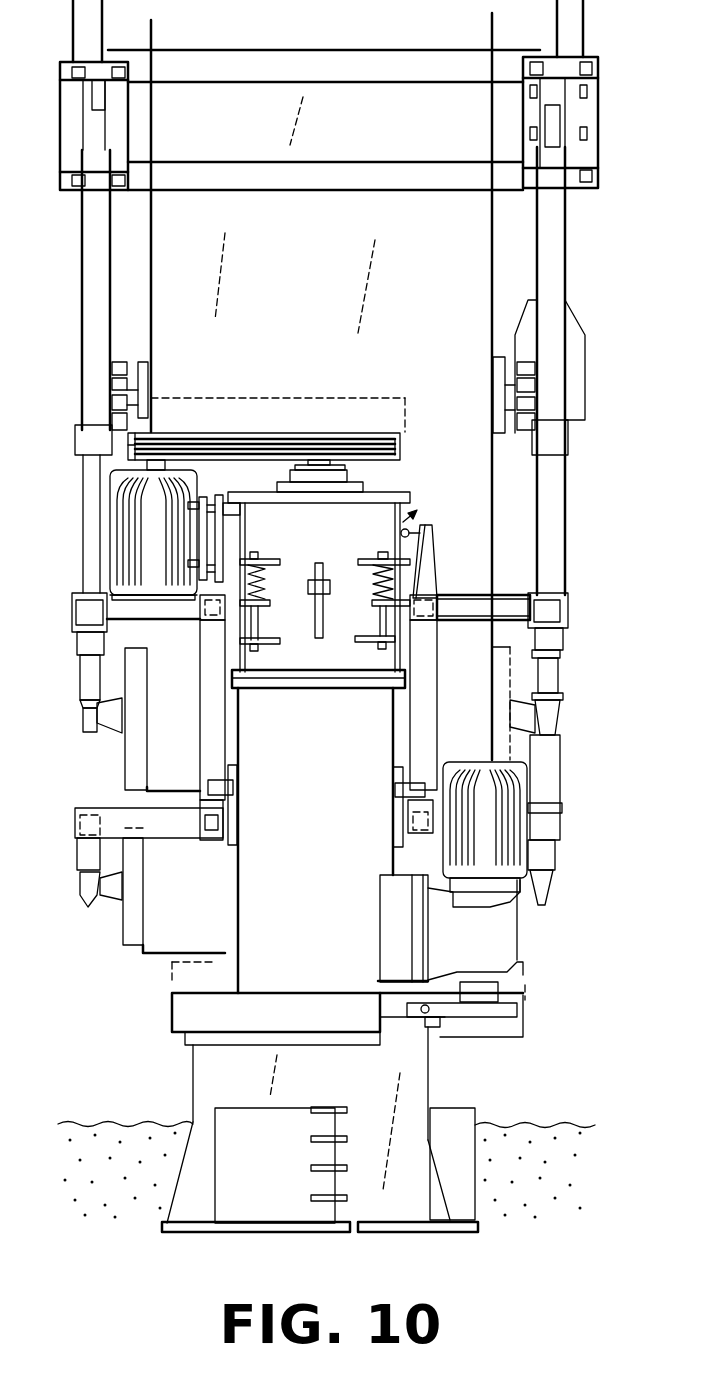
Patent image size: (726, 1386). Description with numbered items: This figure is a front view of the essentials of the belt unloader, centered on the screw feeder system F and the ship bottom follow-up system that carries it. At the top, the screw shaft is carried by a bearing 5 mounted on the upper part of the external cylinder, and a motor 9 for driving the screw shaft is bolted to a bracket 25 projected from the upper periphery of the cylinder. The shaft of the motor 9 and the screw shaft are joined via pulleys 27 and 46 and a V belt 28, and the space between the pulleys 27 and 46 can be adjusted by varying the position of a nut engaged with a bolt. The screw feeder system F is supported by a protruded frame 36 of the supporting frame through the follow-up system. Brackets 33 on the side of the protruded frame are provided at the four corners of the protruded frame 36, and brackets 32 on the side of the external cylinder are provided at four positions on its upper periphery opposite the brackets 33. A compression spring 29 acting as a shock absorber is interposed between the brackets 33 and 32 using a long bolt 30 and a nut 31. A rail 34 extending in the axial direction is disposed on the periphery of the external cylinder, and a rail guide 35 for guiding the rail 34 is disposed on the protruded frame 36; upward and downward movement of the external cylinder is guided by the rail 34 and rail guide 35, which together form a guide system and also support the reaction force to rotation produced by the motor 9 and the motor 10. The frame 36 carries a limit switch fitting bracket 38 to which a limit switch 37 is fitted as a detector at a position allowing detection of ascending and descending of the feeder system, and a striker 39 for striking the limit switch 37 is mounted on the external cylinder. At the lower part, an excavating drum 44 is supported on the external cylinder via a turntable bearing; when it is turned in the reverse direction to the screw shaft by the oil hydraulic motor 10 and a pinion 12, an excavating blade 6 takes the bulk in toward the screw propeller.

The bearing 5 is at (365, 483).
The excavating blade 6 is at (235, 1133).
The motor 9 is at (110, 536).
The oil hydraulic motor 10 is at (527, 803).
The pinion 12 is at (478, 1010).
The bracket 25 is at (232, 458).
The pulley 27 is at (347, 443).
The V belt 28 is at (218, 450).
The compression spring 29 is at (313, 632).
The long bolt 30 is at (362, 645).
The nut 31 is at (368, 655).
The bracket on the side of the external cylinder 32 is at (357, 553).
The bracket on the side of the protruded frame 33 is at (400, 600).
The rail 34 is at (297, 627).
The rail guide 35 is at (305, 588).
The protruded frame 36 is at (418, 716).
The limit switch 37 is at (423, 524).
The limit switch fitting bracket 38 is at (437, 577).
The striker 39 is at (393, 560).
The excavating drum 44 is at (213, 1068).
The pulley 46 is at (160, 447).
The screw feeder system F is at (306, 877).